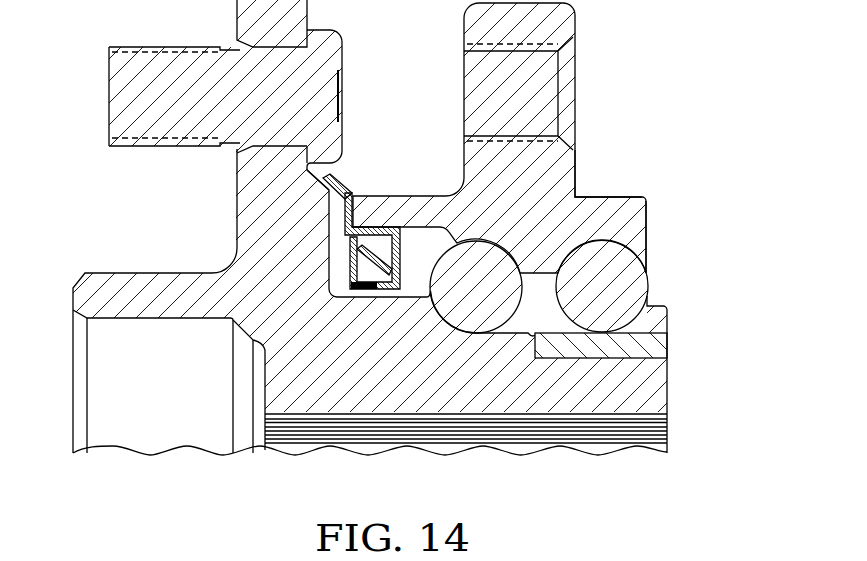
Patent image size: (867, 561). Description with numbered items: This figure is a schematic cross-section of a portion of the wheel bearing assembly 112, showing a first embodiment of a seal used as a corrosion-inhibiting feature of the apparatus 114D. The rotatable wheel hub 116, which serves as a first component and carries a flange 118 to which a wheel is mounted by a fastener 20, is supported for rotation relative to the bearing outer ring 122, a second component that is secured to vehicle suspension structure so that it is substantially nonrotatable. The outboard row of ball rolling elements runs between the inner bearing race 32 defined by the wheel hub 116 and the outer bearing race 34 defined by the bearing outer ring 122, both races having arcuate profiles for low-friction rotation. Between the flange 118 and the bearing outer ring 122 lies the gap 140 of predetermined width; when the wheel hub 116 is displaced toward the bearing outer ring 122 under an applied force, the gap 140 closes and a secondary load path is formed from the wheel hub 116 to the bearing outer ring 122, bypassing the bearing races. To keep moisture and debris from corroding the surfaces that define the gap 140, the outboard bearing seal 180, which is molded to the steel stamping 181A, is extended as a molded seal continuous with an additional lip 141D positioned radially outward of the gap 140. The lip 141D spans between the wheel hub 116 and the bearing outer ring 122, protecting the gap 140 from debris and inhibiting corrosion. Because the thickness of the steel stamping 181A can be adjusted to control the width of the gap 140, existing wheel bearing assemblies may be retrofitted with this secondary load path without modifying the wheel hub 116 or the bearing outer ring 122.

The fastener 20 is at (147, 148).
The inner bearing race 32 is at (512, 258).
The outer bearing race 34 is at (452, 318).
The wheel bearing assembly 112 is at (613, 62).
The apparatus 114D is at (359, 176).
The wheel hub 116 is at (627, 387).
The flange 118 is at (256, 183).
The bearing outer ring 122 is at (575, 163).
The gap 140 is at (338, 221).
The lip 141D is at (345, 193).
The outboard bearing seal 180 is at (341, 288).
The steel stamping 181A is at (401, 254).